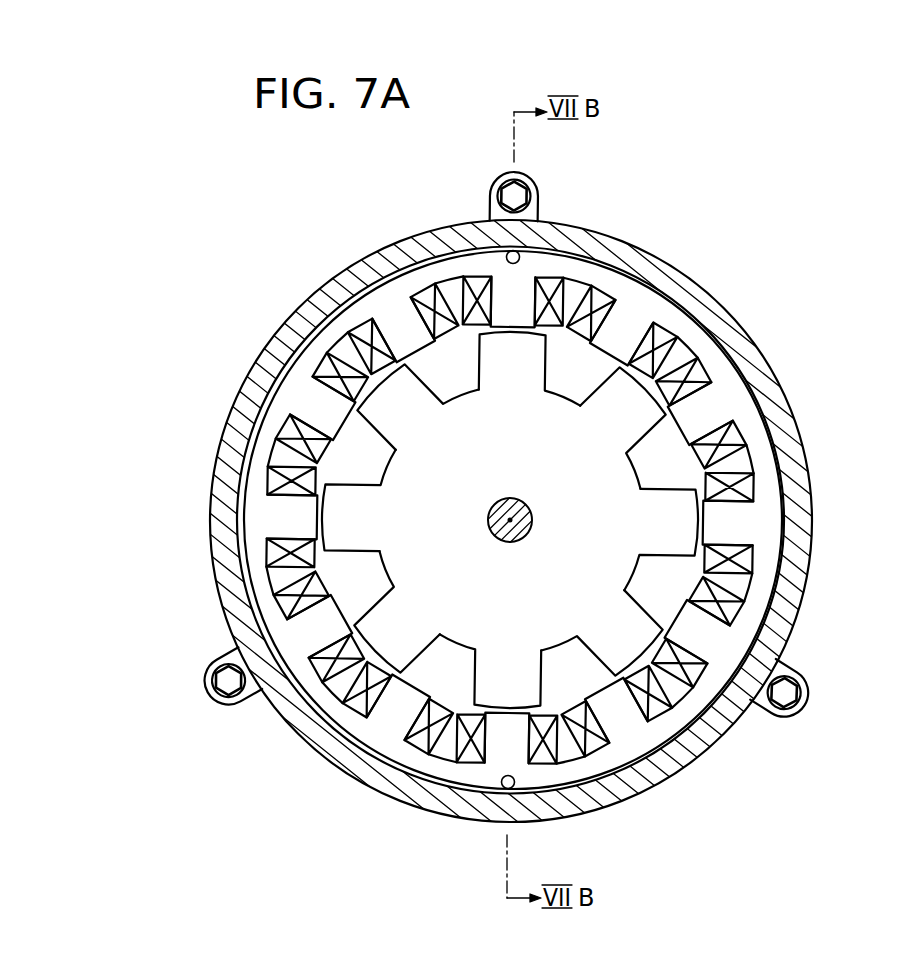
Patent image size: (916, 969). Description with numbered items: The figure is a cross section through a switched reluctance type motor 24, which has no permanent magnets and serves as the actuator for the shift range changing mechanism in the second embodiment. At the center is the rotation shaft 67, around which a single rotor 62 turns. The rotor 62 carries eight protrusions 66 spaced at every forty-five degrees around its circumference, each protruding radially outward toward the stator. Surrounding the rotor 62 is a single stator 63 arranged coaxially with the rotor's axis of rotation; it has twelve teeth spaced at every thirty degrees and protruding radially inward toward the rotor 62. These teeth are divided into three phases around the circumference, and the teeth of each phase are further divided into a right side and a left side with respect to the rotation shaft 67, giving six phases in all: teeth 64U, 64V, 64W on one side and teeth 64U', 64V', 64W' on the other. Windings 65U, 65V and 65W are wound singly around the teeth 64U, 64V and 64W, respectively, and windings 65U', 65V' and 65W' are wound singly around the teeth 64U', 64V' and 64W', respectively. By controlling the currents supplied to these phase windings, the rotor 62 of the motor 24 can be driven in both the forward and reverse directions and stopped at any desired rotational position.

The switched reluctance type motor 24 is at (745, 185).
The rotor 62 is at (460, 425).
The stator 63 is at (462, 263).
The teeth of phase U 64U is at (365, 345).
The teeth of phase V 64V is at (326, 468).
The teeth of phase W 64W is at (323, 554).
The teeth of phase U' 64U' is at (671, 690).
The teeth of phase V' 64V' is at (716, 578).
The teeth of phase W' 64W' is at (709, 480).
The winding of phase U 65U is at (401, 390).
The winding of phase V 65V is at (360, 510).
The winding of phase W 65W is at (314, 591).
The winding of phase U' 65U' is at (672, 652).
The winding of phase V' 65V' is at (718, 588).
The winding of phase W' 65W' is at (721, 455).
The protrusions 66 is at (727, 350).
The rotation shaft 67 is at (518, 505).